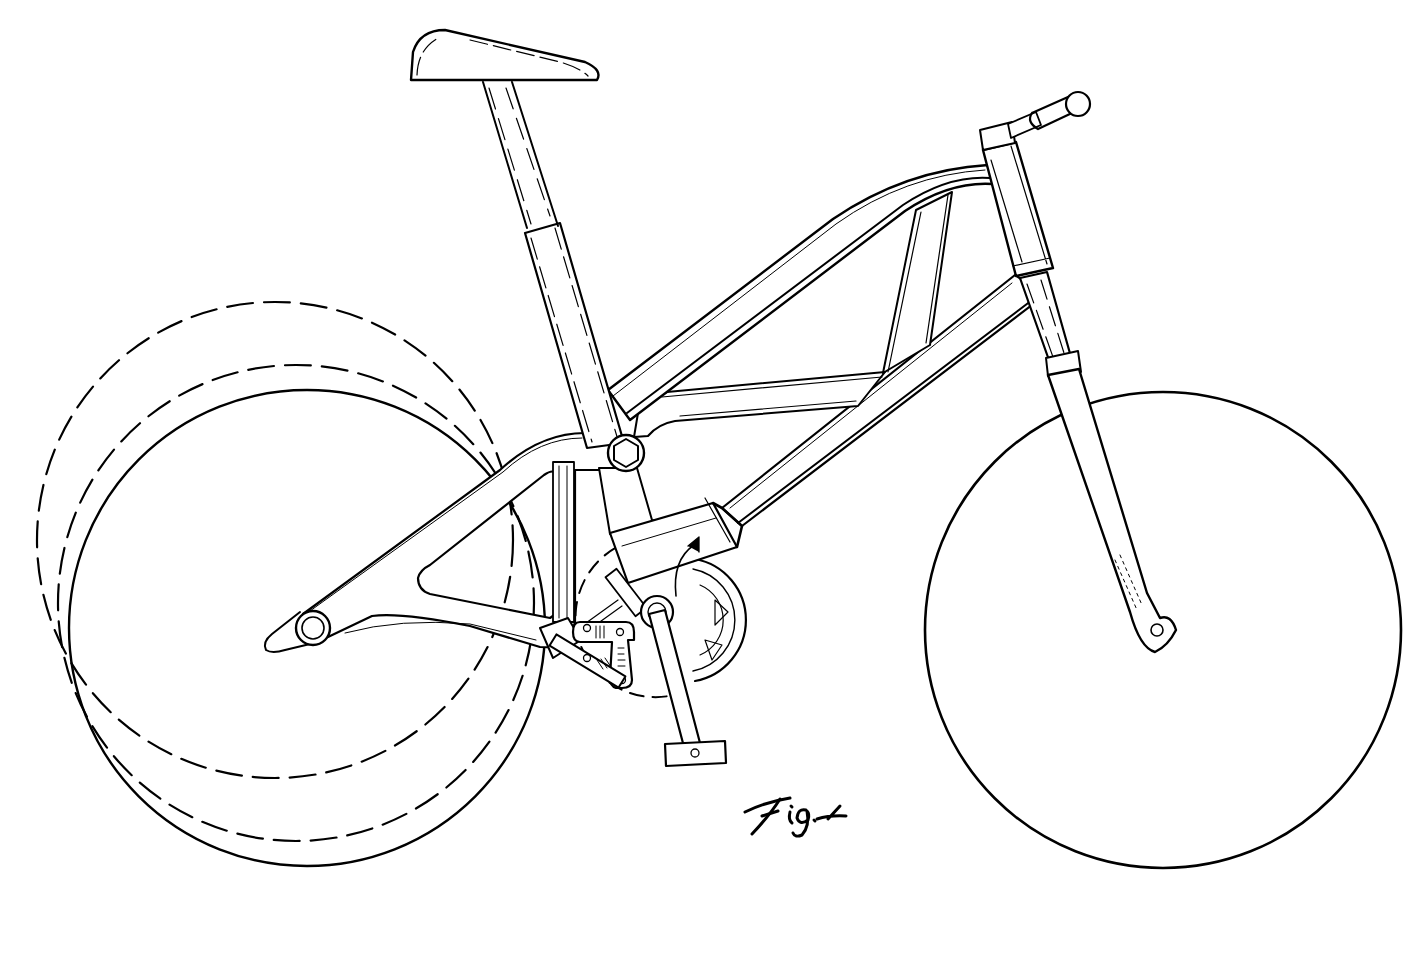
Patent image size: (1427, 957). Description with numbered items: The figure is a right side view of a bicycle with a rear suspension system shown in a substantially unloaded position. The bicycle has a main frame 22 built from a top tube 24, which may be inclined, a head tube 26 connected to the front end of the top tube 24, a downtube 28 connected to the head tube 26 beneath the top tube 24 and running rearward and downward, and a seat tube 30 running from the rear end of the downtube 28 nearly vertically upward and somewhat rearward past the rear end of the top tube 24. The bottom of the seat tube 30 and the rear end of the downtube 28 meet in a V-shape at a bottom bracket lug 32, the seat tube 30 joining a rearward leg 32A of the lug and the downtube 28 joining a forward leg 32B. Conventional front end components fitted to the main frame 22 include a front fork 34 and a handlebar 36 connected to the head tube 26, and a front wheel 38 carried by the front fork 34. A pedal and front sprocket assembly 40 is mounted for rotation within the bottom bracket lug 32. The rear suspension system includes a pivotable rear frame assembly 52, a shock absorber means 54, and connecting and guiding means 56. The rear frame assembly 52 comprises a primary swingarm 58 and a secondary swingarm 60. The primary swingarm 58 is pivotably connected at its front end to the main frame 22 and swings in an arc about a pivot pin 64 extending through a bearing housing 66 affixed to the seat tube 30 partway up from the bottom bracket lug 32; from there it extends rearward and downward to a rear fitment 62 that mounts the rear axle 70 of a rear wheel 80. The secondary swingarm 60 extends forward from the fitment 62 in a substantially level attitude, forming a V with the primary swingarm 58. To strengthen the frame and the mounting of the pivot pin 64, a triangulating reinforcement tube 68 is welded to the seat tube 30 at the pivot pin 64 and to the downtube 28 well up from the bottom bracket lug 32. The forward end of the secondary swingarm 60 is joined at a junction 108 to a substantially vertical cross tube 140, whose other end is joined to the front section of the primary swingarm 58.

The main frame 22 is at (584, 237).
The top tube 24 is at (897, 181).
The head tube 26 is at (1022, 192).
The downtube 28 is at (828, 463).
The seat tube 30 is at (563, 277).
The bottom bracket lug 32 is at (742, 546).
The rearward leg 32A is at (659, 532).
The forward leg 32B is at (750, 513).
The front fork 34 is at (1045, 296).
The handlebar 36 is at (1053, 100).
The front wheel 38 is at (1238, 398).
The pedal and front sprocket assembly 40 is at (690, 706).
The pivotable rear frame assembly 52 is at (551, 428).
The shock absorber means 54 is at (600, 598).
The connecting and guiding means 56 is at (598, 682).
The primary swingarm 58 is at (456, 504).
The secondary swingarm 60 is at (440, 618).
The rear fitment 62 is at (312, 646).
The pivot pin 64 is at (628, 453).
The bearing housing 66 is at (643, 437).
The triangulating reinforcement tube 68 is at (843, 380).
The rear axle 70 is at (298, 618).
The rear wheel 80 is at (152, 820).
The junction 108 is at (576, 667).
The cross tube 140 is at (552, 524).